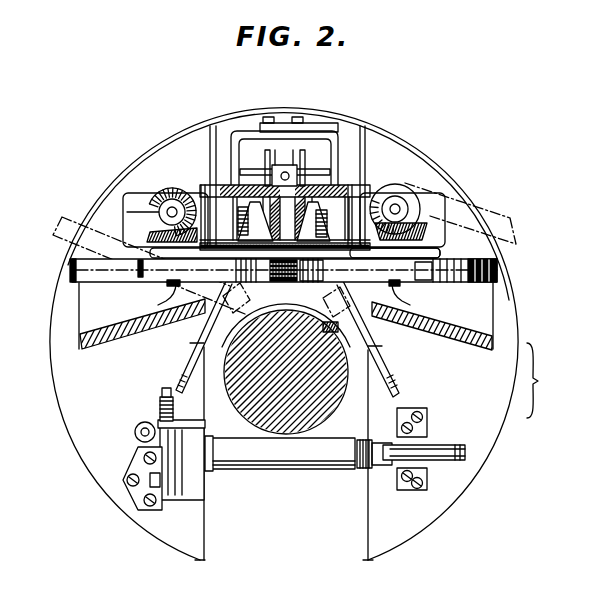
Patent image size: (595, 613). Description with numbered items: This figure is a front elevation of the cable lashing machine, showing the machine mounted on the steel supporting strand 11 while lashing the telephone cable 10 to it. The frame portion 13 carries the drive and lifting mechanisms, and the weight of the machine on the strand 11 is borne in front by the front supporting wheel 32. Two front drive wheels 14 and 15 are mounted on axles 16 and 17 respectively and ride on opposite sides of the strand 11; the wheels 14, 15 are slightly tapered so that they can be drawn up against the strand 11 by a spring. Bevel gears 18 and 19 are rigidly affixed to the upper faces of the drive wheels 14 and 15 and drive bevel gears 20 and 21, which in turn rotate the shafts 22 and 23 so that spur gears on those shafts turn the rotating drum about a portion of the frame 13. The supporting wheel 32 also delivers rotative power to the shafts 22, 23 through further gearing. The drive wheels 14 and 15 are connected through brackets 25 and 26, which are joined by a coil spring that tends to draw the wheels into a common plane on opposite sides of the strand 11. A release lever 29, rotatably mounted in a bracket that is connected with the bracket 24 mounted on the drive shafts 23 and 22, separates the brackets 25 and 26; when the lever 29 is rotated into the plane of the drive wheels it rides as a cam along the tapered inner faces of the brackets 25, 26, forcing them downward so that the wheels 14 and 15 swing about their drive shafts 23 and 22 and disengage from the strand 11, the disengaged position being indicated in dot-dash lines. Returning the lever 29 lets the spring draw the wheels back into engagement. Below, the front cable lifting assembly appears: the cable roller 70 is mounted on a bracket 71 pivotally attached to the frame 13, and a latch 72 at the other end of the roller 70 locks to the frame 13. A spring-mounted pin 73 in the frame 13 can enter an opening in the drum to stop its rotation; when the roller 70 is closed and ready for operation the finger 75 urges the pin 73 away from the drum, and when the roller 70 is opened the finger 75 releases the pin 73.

The telephone cable 10 is at (257, 413).
The supporting strand 11 is at (283, 281).
The frame portion 13 is at (545, 380).
The front drive wheel 14 is at (72, 268).
The front drive wheel 15 is at (497, 271).
The axle 16 is at (173, 286).
The axle 17 is at (395, 286).
The bevel gear 18 is at (186, 190).
The bevel gear 19 is at (436, 231).
The bevel gear 20 is at (167, 186).
The bevel gear 21 is at (395, 197).
The shaft 22 is at (148, 233).
The shaft 23 is at (393, 206).
The bracket 24 is at (200, 188).
The bracket 25 is at (127, 213).
The bracket 26 is at (428, 201).
The release lever 29 is at (309, 281).
The front supporting wheel 32 is at (300, 144).
The cable roller 70 is at (292, 457).
The bracket 71 is at (160, 469).
The latch 72 is at (442, 455).
The pin 73 is at (137, 428).
The finger 75 is at (152, 412).